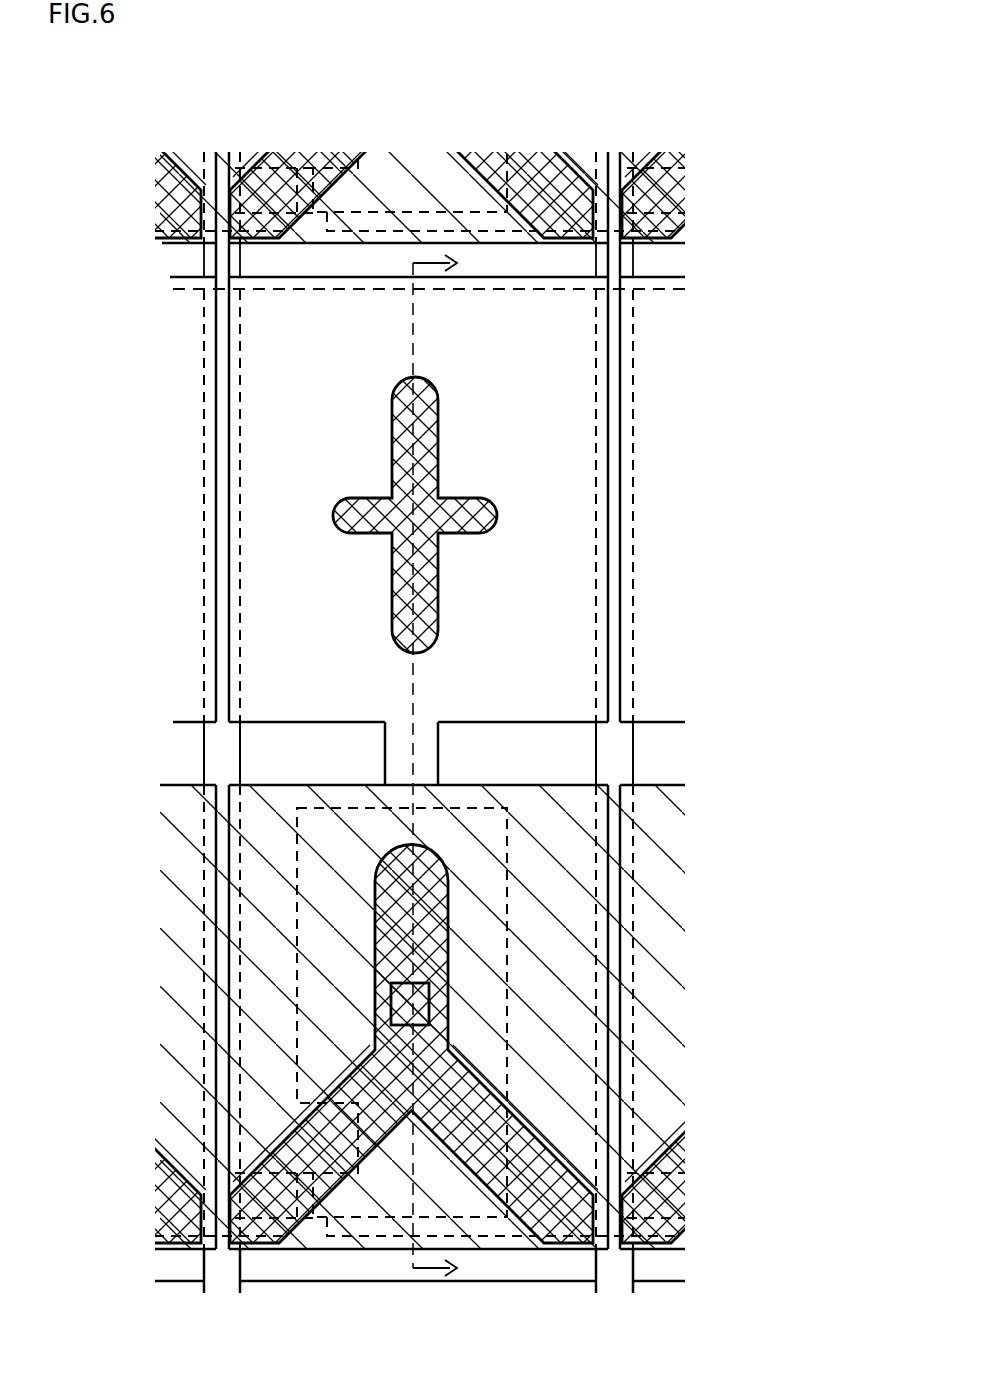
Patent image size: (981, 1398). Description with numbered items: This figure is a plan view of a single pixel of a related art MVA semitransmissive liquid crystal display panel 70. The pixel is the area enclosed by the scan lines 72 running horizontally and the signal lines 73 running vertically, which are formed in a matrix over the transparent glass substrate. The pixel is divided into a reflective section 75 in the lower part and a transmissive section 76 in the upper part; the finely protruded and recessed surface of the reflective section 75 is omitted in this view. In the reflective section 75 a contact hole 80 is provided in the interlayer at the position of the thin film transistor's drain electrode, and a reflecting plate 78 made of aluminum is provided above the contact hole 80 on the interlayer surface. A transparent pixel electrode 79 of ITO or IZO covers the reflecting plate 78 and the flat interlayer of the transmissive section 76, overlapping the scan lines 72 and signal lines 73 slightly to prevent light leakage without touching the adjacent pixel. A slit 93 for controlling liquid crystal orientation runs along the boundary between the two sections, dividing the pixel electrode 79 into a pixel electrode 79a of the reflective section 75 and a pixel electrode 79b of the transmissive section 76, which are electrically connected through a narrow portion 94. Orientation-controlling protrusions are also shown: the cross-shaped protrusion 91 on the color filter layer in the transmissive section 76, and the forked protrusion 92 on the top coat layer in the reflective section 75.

The semitransmissive liquid crystal display panel 70 is at (138, 126).
The scan lines 72 is at (314, 258).
The signal lines 73 is at (613, 535).
The reflective section 75 is at (565, 888).
The transmissive section 76 is at (373, 303).
The reflecting plate 78 is at (267, 833).
The pixel electrode 79 is at (567, 360).
The pixel electrode of the reflective section 79a is at (610, 1008).
The pixel electrode of the transmissive section 79b is at (562, 458).
The contact hole 80 is at (397, 1012).
The protrusion 91 is at (405, 518).
The protrusion 92 is at (463, 1115).
The slit 93 is at (537, 752).
The narrow portion 94 is at (440, 740).